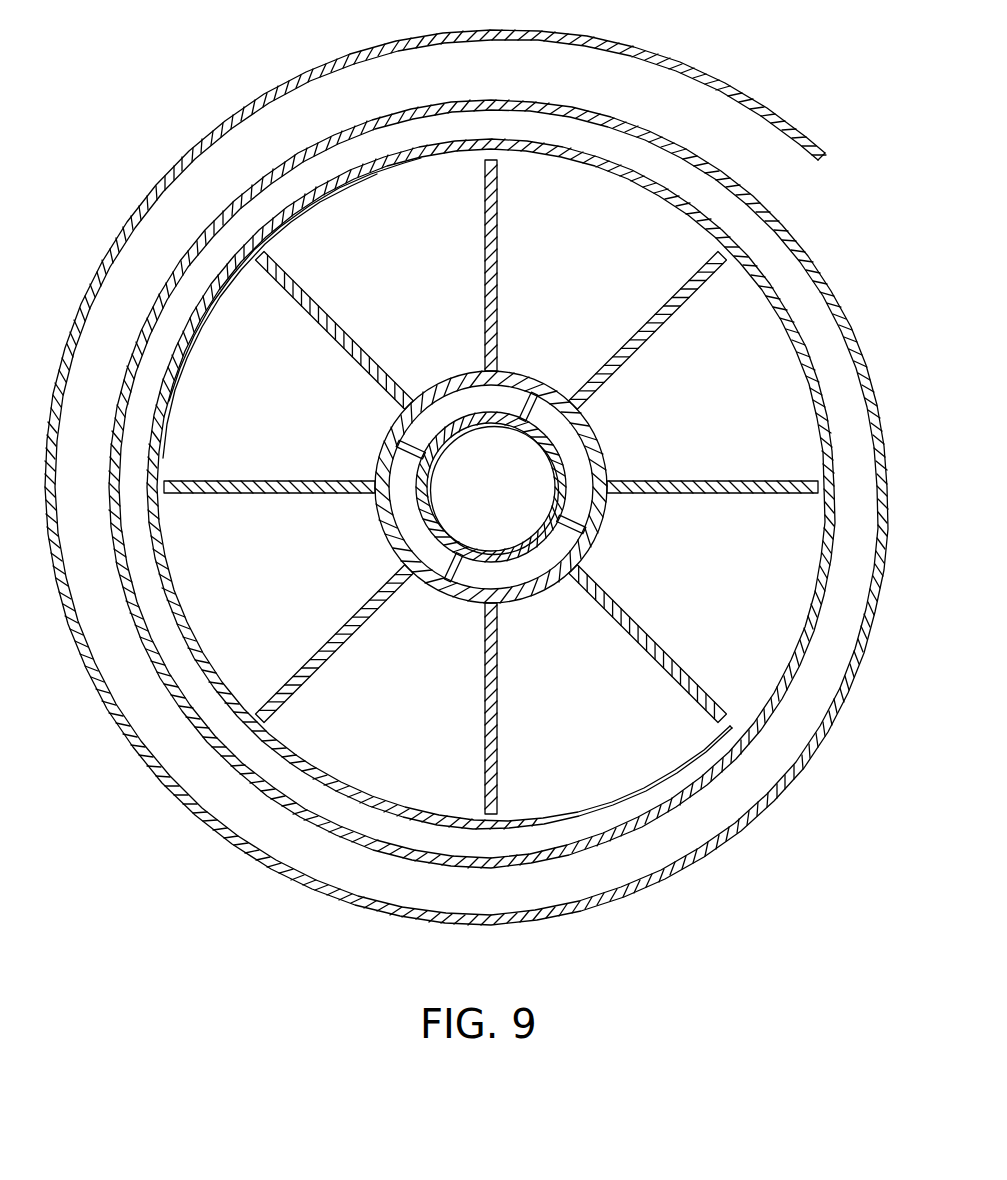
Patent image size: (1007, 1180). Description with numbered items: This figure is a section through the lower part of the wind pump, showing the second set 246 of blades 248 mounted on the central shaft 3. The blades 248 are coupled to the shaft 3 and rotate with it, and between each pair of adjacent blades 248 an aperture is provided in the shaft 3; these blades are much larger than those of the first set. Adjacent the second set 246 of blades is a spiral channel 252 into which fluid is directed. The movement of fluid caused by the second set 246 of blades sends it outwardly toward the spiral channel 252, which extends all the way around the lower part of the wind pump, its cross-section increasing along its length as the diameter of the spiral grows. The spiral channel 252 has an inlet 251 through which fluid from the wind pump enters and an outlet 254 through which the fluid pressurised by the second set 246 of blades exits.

The shaft 3 is at (452, 438).
The second set of blades 246 is at (523, 600).
The blades 248 is at (613, 600).
The inlet 251 is at (743, 733).
The spiral channel 252 is at (800, 737).
The outlet 254 is at (772, 212).